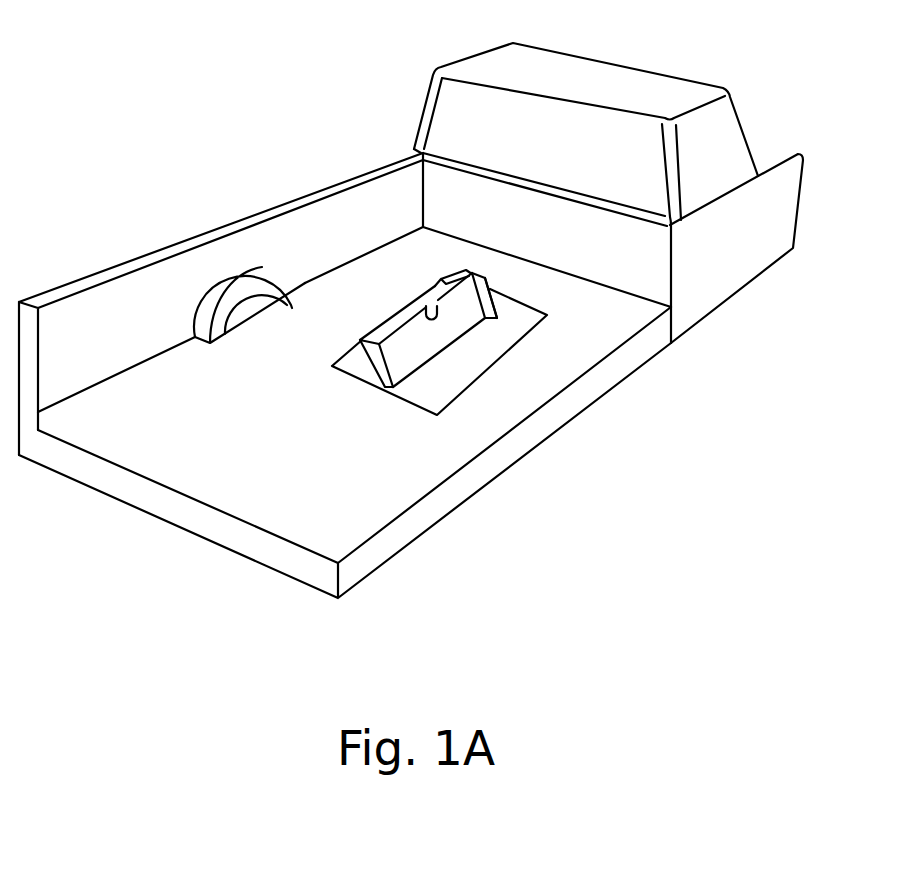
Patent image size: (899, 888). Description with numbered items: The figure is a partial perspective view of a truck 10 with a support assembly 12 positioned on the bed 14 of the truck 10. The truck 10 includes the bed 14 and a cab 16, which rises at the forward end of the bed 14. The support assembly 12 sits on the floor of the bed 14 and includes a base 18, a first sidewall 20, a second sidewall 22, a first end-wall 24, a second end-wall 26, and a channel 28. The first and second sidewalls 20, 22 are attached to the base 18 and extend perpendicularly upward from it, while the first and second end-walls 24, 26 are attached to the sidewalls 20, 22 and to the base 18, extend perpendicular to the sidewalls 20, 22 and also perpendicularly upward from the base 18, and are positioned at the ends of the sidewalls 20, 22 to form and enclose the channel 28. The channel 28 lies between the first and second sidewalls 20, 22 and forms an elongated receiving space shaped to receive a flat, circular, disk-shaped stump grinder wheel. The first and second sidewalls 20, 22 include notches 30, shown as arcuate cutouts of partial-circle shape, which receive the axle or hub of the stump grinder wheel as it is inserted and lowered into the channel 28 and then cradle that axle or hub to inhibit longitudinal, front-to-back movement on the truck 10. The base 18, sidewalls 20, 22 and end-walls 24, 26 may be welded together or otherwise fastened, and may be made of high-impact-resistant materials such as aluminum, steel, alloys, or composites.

The truck 10 is at (128, 90).
The support assembly 12 is at (408, 351).
The bed 14 is at (243, 488).
The cab 16 is at (420, 108).
The base 18 is at (432, 392).
The first sidewall 20 is at (458, 314).
The second sidewall 22 is at (428, 292).
The first end-wall 24 is at (377, 367).
The second end-wall 26 is at (488, 290).
The channel 28 is at (485, 271).
The notches 30 is at (428, 310).